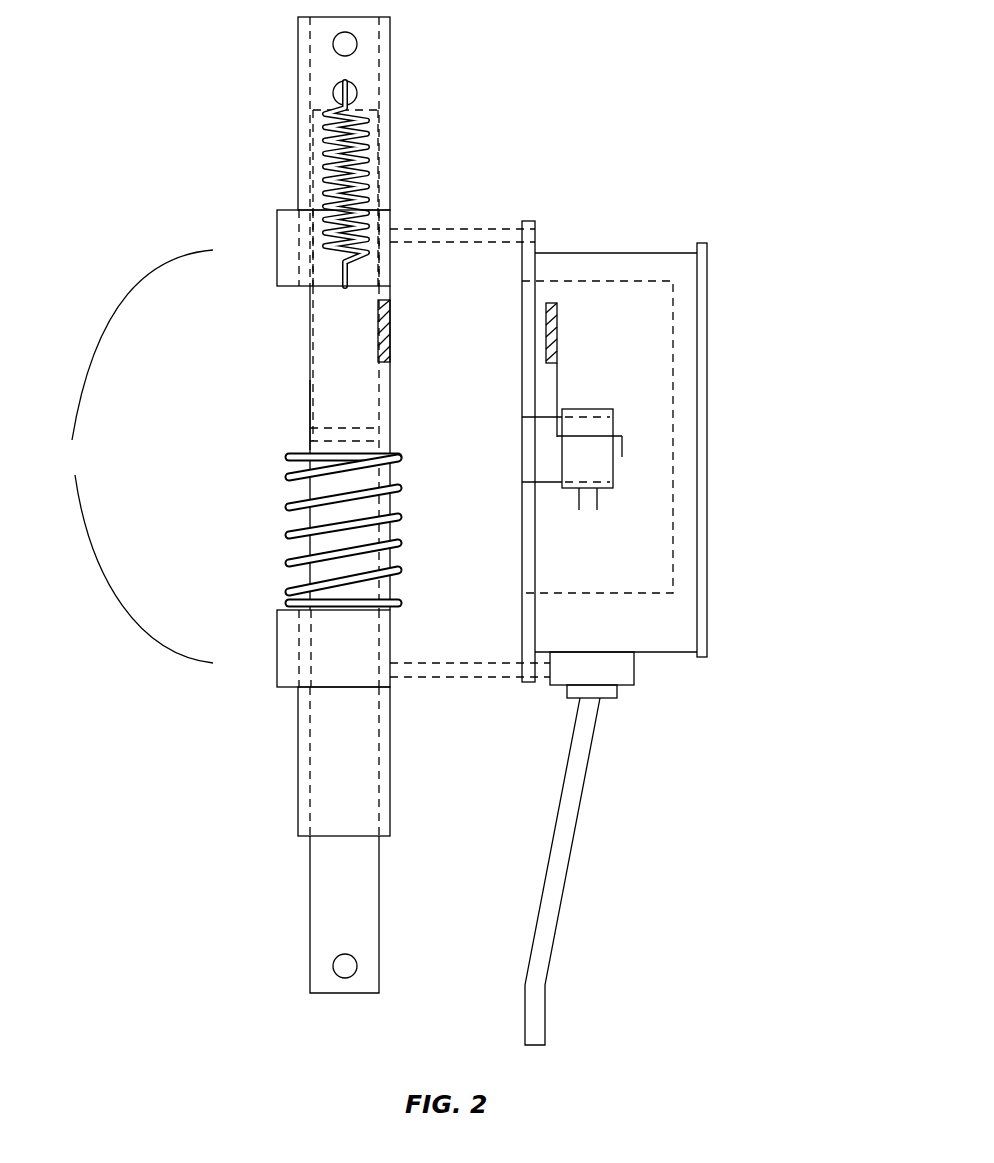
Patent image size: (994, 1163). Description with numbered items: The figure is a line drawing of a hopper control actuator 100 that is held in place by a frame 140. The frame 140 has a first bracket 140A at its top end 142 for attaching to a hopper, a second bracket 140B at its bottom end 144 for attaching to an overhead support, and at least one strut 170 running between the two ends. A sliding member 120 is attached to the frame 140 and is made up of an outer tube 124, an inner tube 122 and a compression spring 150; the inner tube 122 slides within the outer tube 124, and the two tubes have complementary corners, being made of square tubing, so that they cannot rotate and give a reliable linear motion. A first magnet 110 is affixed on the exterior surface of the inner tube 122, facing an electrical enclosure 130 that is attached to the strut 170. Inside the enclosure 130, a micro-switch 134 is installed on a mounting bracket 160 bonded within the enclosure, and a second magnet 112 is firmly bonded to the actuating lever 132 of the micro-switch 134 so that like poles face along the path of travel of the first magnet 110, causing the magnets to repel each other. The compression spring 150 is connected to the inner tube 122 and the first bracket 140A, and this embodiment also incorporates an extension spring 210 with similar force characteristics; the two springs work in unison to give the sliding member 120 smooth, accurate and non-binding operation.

The hopper control actuator 100 is at (475, 107).
The first magnet 110 is at (390, 332).
The second magnet 112 is at (557, 327).
The sliding member 120 is at (310, 320).
The inner tube 122 is at (310, 385).
The outer tube 124 is at (298, 725).
The electrical enclosure 130 is at (637, 623).
The actuating lever 132 is at (557, 375).
The micro-switch 134 is at (613, 425).
The frame 140 is at (135, 456).
The first bracket 140A is at (277, 250).
The second bracket 140B is at (277, 640).
The top end 142 is at (298, 55).
The bottom end 144 is at (310, 960).
The compression spring 150 is at (289, 507).
The mounting bracket 160 is at (545, 482).
The strut 170 is at (495, 228).
The extension spring 210 is at (315, 137).